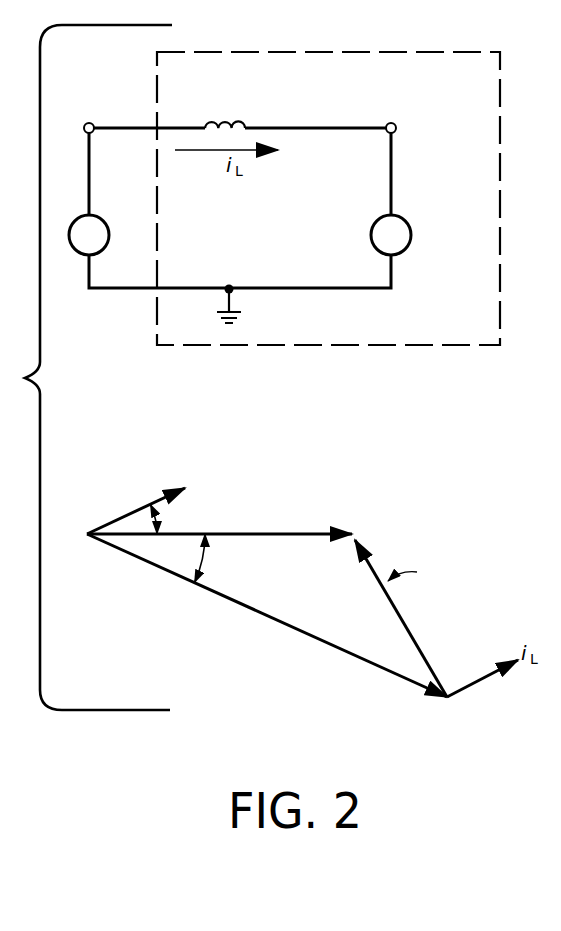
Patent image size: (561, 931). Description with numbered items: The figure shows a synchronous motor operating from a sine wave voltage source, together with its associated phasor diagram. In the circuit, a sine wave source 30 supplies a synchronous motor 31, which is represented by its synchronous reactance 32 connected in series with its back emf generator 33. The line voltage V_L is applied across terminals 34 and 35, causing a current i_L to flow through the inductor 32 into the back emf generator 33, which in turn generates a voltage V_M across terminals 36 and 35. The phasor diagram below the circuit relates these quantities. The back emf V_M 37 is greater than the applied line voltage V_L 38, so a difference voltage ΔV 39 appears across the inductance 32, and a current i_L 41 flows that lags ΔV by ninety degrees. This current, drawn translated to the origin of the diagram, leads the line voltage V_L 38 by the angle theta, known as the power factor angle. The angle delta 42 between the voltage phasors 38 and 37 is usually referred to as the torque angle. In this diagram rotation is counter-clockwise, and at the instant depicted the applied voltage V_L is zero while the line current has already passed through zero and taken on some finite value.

The sine wave source 30 is at (110, 232).
The synchronous motor 31 is at (470, 348).
The synchronous reactance 32 is at (230, 121).
The back emf generator 33 is at (371, 234).
The terminal 34 is at (88, 122).
The terminal 35 is at (231, 285).
The terminal 36 is at (396, 125).
The back emf phasor V_M 37 is at (350, 654).
The line voltage phasor V_L 38 is at (240, 533).
The difference voltage phasor ΔV 39 is at (392, 607).
The line current phasor i_L 41 is at (112, 514).
The torque angle δ 42 is at (227, 560).